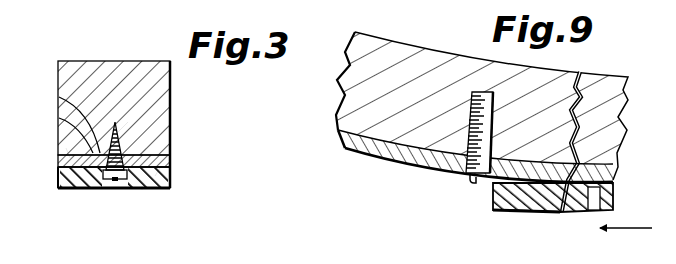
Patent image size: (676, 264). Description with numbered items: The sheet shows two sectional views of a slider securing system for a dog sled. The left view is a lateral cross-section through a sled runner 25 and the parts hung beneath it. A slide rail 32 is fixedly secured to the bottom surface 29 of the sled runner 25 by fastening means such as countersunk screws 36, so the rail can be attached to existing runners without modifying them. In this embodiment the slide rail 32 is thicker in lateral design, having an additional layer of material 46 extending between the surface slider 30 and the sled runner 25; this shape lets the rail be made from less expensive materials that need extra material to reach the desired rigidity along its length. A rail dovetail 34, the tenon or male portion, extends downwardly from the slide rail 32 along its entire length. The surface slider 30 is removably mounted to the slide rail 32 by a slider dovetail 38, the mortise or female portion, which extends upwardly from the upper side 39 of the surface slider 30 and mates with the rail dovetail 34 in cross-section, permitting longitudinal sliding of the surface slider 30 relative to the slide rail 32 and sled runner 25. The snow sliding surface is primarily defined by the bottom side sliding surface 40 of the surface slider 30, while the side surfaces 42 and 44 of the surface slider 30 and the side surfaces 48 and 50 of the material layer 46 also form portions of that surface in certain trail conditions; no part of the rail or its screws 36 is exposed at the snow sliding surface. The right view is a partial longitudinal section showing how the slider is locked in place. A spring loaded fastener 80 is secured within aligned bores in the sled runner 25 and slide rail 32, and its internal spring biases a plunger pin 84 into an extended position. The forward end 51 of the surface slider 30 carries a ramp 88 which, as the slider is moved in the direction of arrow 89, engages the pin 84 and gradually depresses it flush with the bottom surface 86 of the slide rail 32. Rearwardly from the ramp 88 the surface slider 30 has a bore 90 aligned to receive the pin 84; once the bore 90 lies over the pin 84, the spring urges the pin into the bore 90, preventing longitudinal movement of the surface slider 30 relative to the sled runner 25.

In FIG. 3, the sled runner 25 is at (104, 62).
In FIG. 9, the sled runner 25 is at (461, 58).
In FIG. 3, the bottom surface 29 is at (59, 118).
In FIG. 3, the surface slider 30 is at (142, 190).
In FIG. 9, the surface slider 30 is at (567, 212).
In FIG. 3, the slide rail 32 is at (171, 113).
In FIG. 9, the slide rail 32 is at (383, 162).
In FIG. 3, the rail dovetail 34 is at (137, 156).
In FIG. 3, the countersunk screws 36 is at (119, 130).
In FIG. 3, the slider dovetail 38 is at (109, 188).
In FIG. 3, the upper side 39 is at (59, 98).
In FIG. 3, the bottom side sliding surface 40 is at (91, 188).
In FIG. 3, the side surface 42 is at (62, 188).
In FIG. 3, the side surface 44 is at (171, 179).
In FIG. 3, the layer of material 46 is at (70, 156).
In FIG. 3, the side surface 48 is at (60, 161).
In FIG. 3, the side surface 50 is at (171, 162).
In FIG. 9, the forward end 51 is at (492, 196).
In FIG. 9, the spring loaded fastener 80 is at (470, 122).
In FIG. 9, the plunger pin 84 is at (470, 181).
In FIG. 9, the bottom surface 86 is at (420, 172).
In FIG. 9, the ramp 88 is at (525, 205).
In FIG. 9, the arrow 89 is at (625, 229).
In FIG. 9, the bore 90 is at (615, 202).